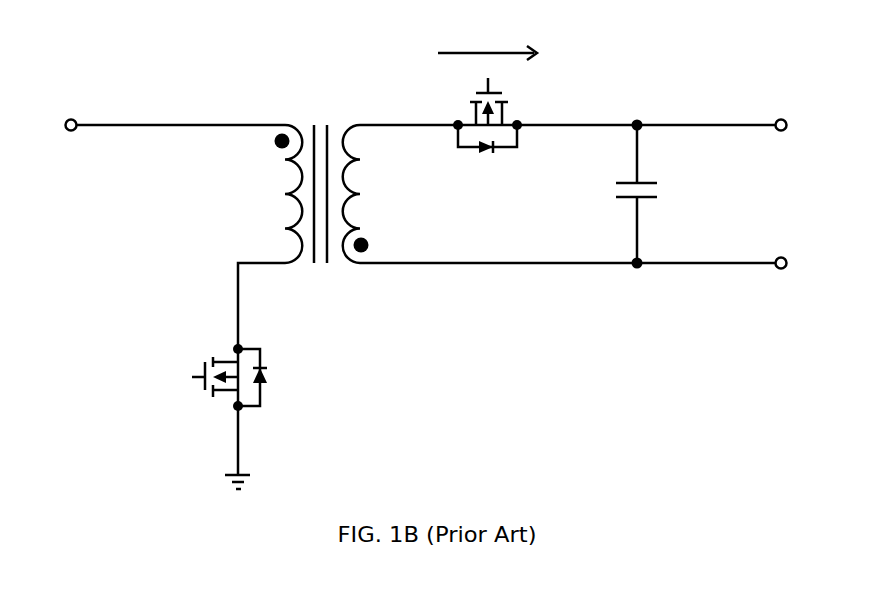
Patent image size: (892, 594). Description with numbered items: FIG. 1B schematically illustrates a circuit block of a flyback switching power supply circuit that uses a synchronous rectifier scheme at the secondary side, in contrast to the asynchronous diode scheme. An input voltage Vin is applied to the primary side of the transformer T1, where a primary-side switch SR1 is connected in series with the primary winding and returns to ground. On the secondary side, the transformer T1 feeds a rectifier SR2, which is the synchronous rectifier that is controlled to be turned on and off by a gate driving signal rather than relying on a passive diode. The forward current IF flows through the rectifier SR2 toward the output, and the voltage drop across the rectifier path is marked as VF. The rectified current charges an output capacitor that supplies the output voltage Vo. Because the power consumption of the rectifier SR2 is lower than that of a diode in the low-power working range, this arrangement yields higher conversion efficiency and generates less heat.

The transformer T1 is at (506, 218).
The primary-side synchronous rectifier MOSFET SR1 is at (229, 402).
The rectifier SR2 is at (567, 100).
The body diode forward voltage VF is at (484, 154).
The forward current IF is at (487, 40).
The input voltage terminals Vin is at (165, 294).
The output voltage terminals with output capacitor Vo is at (721, 193).